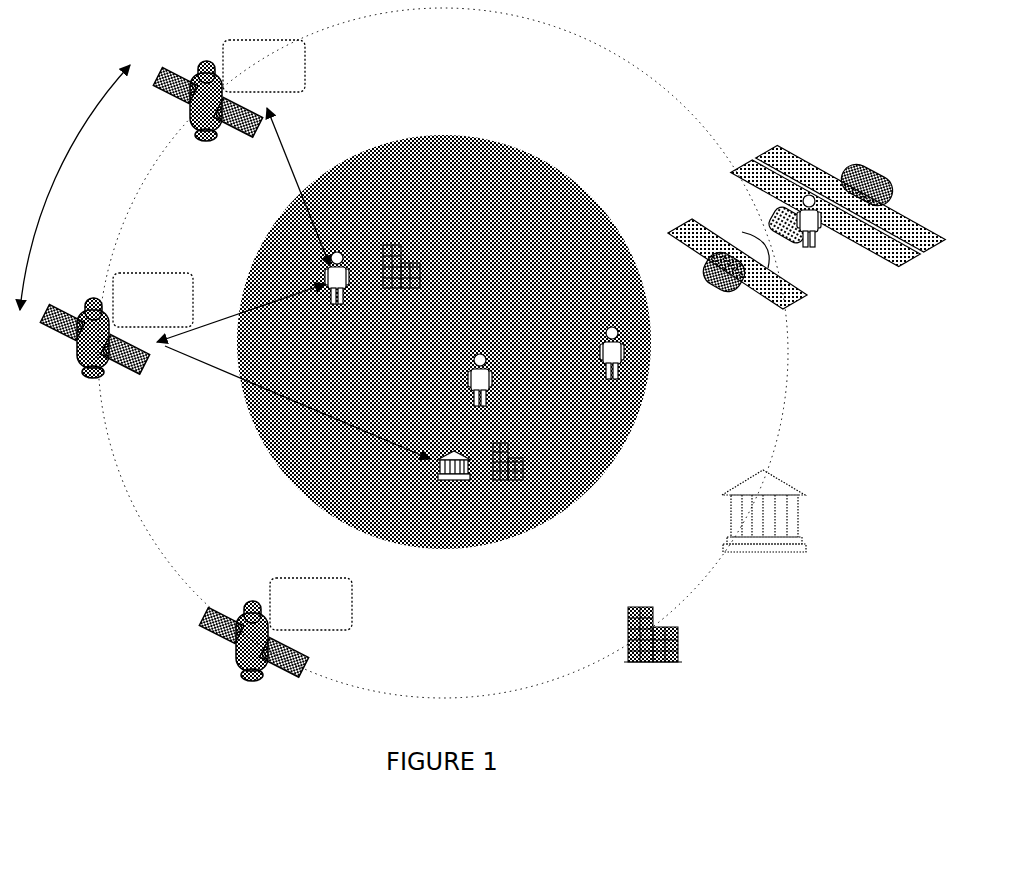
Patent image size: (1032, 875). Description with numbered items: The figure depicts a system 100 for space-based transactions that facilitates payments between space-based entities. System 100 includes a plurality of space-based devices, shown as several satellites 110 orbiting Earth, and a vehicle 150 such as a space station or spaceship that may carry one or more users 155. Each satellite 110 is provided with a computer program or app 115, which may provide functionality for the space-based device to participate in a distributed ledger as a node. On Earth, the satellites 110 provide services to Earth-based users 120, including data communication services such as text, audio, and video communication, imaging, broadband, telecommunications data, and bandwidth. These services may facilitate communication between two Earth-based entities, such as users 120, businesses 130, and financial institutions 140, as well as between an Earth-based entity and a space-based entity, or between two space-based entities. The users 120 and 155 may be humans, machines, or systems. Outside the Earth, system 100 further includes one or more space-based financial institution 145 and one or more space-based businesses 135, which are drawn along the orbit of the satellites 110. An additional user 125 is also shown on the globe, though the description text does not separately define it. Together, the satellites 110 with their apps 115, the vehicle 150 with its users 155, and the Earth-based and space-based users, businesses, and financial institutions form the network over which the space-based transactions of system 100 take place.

The system for space-based transactions 100 is at (864, 697).
The satellites 110 is at (174, 384).
The app 115 is at (232, 335).
The Earth-based users 120 is at (337, 290).
The user 125 is at (546, 377).
The businesses 130 is at (453, 375).
The space-based businesses 135 is at (653, 645).
The financial institutions 140 is at (454, 473).
The space-based financial institution 145 is at (764, 521).
The vehicle 150 is at (806, 237).
The users 155 is at (809, 232).